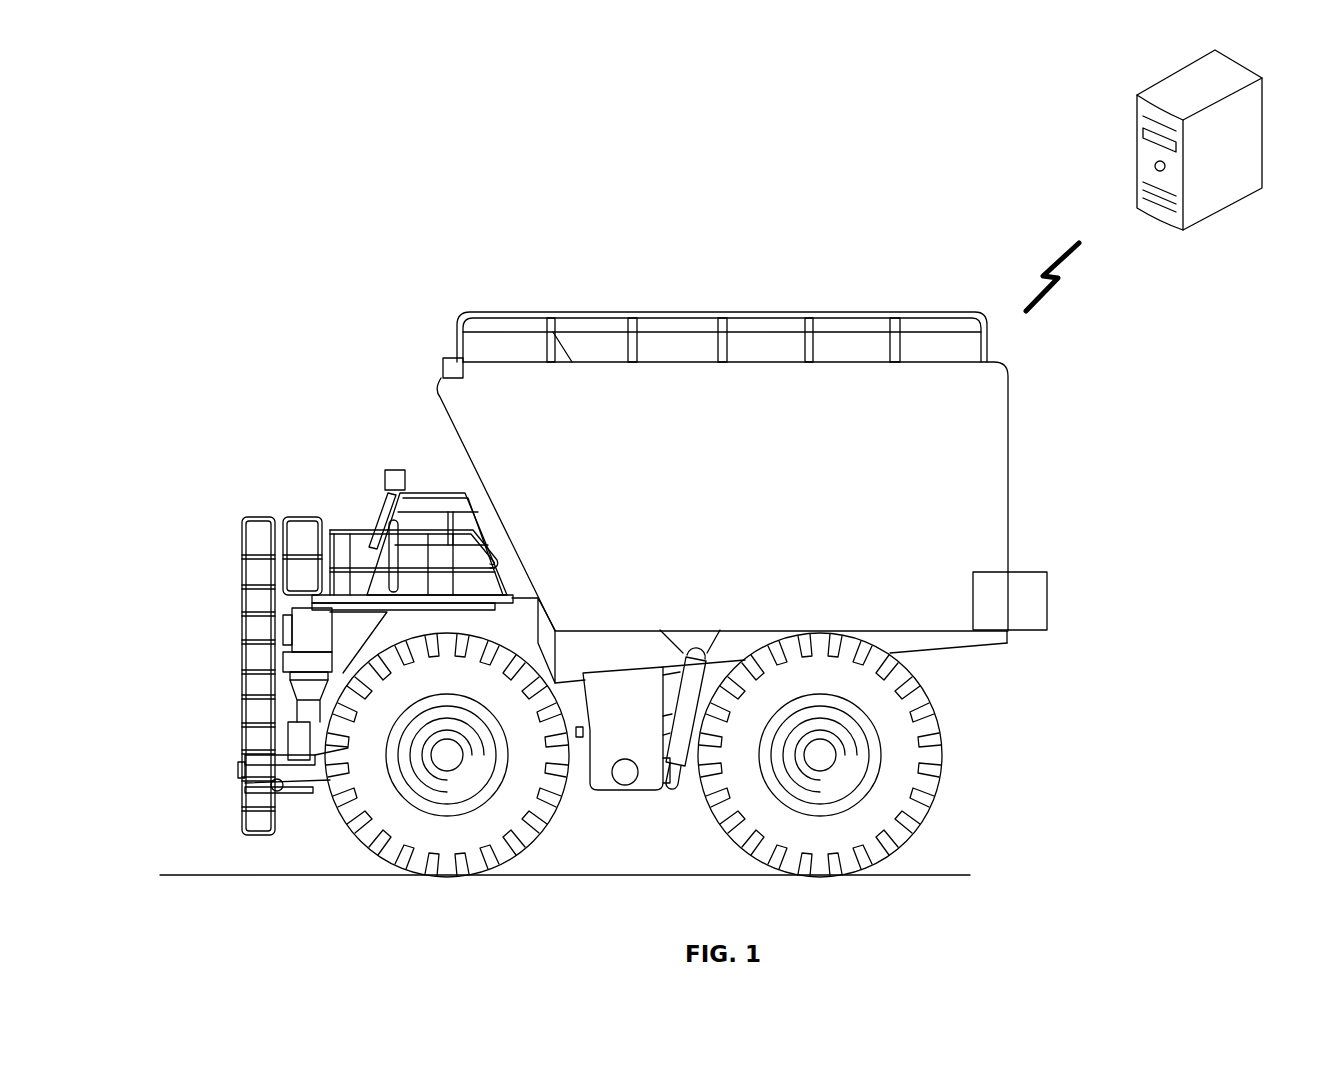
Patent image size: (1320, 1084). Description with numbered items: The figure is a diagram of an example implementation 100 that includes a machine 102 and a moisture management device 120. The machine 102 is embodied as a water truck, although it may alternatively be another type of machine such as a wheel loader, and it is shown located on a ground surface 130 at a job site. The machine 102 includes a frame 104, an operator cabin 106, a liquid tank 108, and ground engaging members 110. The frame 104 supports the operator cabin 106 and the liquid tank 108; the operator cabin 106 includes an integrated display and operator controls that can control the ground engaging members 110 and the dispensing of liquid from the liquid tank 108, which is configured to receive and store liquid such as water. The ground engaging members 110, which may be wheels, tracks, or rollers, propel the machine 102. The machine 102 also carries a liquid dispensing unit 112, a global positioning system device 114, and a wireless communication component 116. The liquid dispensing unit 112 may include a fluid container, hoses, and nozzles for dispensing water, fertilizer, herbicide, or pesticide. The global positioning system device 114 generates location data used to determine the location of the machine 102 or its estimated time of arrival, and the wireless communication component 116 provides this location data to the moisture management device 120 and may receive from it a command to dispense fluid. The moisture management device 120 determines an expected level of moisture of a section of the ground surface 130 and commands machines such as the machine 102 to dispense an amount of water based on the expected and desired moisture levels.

The example implementation 100 is at (245, 66).
The machine 102 is at (645, 255).
The frame 104 is at (632, 800).
The operator cabin 106 is at (452, 500).
The liquid tank 108 is at (992, 443).
The ground engaging members 110 is at (494, 866).
The liquid dispensing unit 112 is at (1040, 608).
The global positioning system (GPS) device 114 is at (440, 362).
The wireless communication component 116 is at (386, 483).
The moisture management device 120 is at (1144, 180).
The ground surface 130 is at (307, 876).